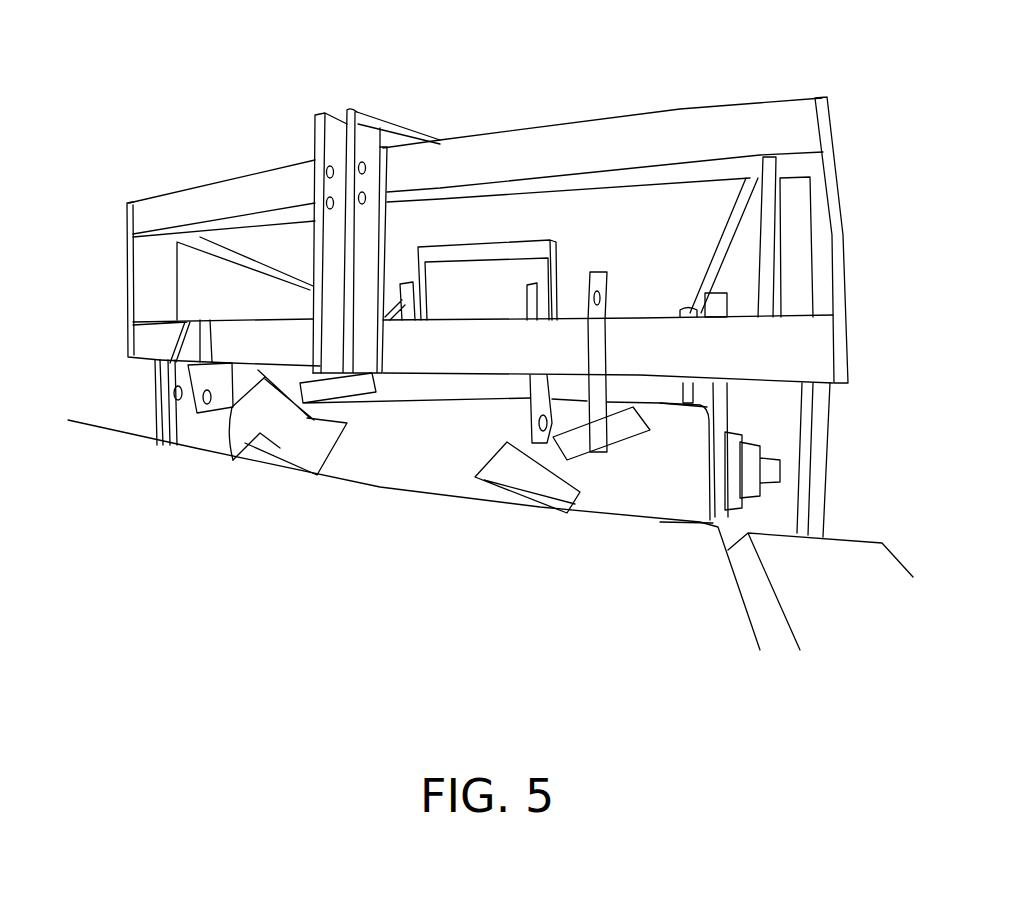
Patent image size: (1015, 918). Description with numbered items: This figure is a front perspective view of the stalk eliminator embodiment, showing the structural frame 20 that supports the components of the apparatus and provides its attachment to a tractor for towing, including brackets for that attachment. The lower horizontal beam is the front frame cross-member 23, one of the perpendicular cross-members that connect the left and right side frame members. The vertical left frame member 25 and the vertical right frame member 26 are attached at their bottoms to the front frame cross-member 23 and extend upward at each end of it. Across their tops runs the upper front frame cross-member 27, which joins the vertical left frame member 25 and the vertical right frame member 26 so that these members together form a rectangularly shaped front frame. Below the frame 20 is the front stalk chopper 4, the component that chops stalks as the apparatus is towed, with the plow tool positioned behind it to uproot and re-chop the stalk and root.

The frame 20 is at (230, 171).
The upper front frame cross-member 27 is at (637, 143).
The vertical left frame member 25 is at (822, 212).
The front frame cross-member 23 is at (778, 352).
The vertical right frame member 26 is at (143, 272).
The front stalk chopper 4 is at (386, 433).